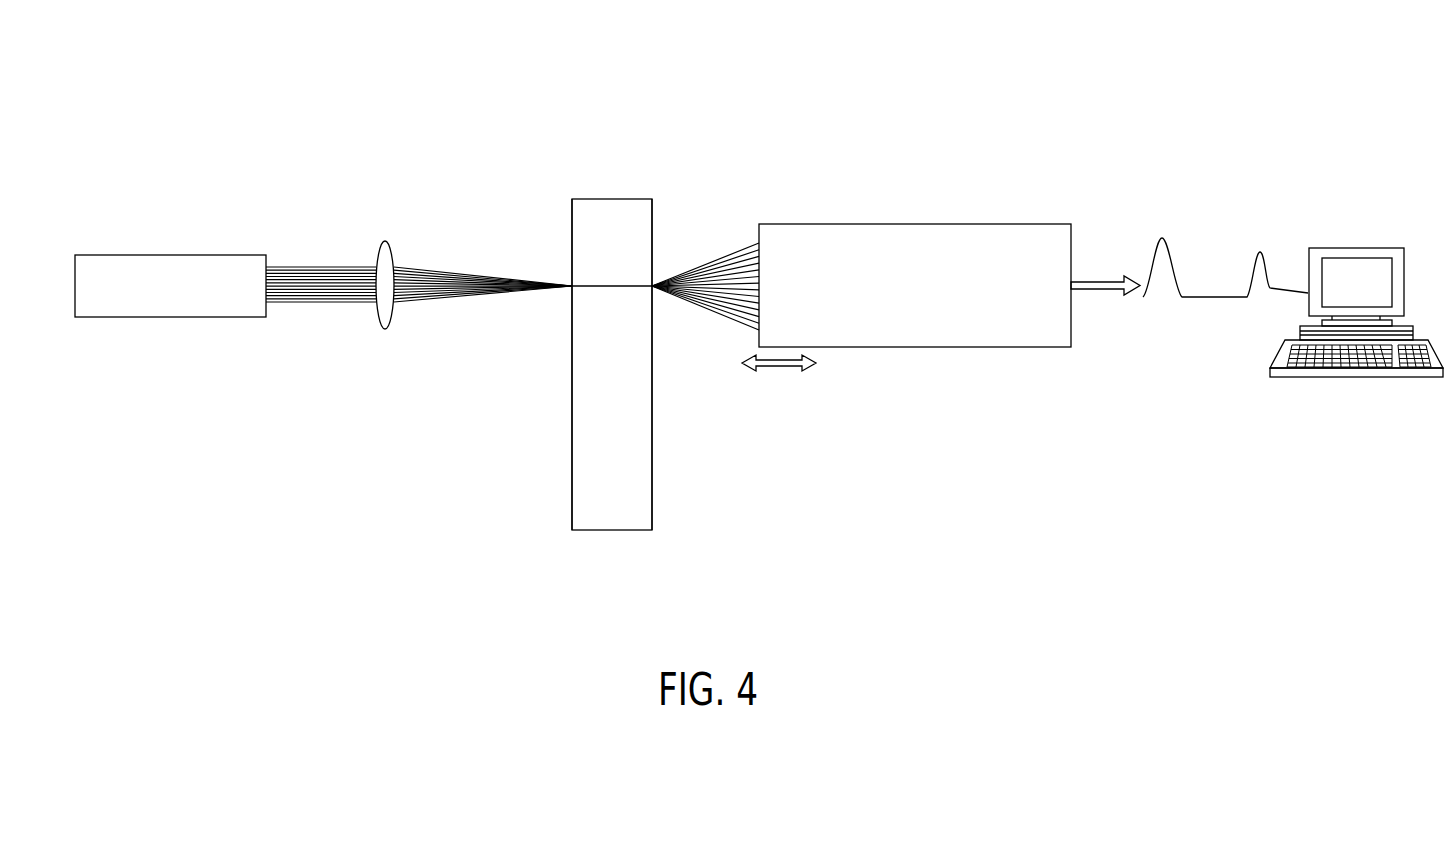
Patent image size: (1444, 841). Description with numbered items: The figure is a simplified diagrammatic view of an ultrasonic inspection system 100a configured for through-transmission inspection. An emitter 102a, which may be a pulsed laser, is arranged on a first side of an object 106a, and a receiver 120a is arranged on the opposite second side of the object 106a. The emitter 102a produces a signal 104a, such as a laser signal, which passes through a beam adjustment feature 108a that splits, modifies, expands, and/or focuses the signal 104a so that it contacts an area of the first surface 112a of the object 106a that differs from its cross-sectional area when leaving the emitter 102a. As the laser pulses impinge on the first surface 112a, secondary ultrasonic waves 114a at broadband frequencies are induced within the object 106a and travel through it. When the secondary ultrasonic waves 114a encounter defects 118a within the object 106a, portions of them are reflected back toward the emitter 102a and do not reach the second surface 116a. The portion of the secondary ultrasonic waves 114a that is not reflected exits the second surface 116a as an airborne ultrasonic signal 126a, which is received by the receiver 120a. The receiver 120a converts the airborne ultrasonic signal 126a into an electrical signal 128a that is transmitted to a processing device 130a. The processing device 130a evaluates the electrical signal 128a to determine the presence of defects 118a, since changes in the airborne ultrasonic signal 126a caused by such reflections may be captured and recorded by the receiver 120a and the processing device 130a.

The ultrasonic inspection system 100a is at (1005, 109).
The emitter 102a is at (153, 268).
The signal 104a is at (332, 268).
The object 106a is at (610, 210).
The beam adjustment feature 108a is at (390, 252).
The first surface 112a is at (572, 223).
The secondary ultrasonic waves 114a is at (627, 286).
The second surface 116a is at (652, 460).
The defects 118a is at (599, 361).
The receiver 120a is at (1035, 348).
The airborne ultrasonic signal 126a is at (727, 277).
The electrical signal 128a is at (1227, 297).
The processing device 130a is at (1347, 252).